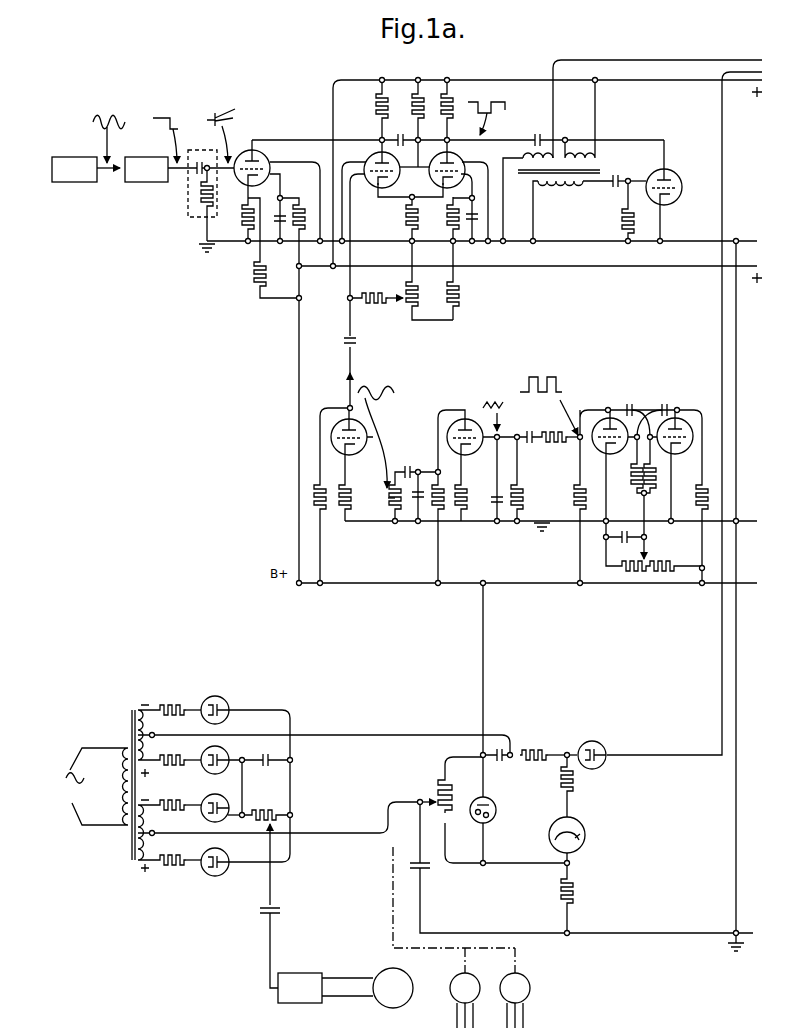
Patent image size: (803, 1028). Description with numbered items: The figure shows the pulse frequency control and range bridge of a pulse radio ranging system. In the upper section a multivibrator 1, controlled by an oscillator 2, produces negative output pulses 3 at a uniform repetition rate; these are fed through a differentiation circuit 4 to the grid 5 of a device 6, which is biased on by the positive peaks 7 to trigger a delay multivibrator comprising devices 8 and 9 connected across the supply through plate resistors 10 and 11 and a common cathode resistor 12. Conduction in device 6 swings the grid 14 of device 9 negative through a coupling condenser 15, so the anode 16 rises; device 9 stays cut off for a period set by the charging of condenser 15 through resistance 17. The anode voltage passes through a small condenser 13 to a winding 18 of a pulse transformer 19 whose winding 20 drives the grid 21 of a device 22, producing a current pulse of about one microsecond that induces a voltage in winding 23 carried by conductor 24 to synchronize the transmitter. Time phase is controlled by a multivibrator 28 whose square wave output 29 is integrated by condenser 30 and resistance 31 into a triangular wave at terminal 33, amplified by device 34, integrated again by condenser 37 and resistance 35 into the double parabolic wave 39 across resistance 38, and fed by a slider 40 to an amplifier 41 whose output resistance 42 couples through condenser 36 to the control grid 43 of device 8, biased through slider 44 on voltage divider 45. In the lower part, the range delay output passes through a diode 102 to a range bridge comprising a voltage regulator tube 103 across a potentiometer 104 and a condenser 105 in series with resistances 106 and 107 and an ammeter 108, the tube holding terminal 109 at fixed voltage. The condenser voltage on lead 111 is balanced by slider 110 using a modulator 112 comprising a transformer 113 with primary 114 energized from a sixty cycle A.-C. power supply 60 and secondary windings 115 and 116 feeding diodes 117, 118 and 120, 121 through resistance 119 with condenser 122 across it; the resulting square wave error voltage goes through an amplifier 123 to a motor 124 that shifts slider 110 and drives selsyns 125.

The multivibrator 1 is at (150, 183).
The oscillator 2 is at (82, 157).
The negative output pulses 3 is at (165, 121).
The differentiation circuit 4 is at (188, 212).
The grid 5 is at (245, 184).
The device 6 is at (269, 158).
The positive peaks 7 is at (230, 114).
The device 8 is at (391, 178).
The device 9 is at (430, 182).
The plate resistor 10 is at (376, 108).
The plate resistor 11 is at (445, 101).
The common cathode resistor 12 is at (404, 229).
The small condenser 13 is at (537, 133).
The grid 14 is at (458, 177).
The coupling condenser 15 is at (399, 134).
The anode 16 is at (457, 157).
The resistance 17 is at (413, 101).
The winding 18 is at (580, 150).
The pulse transformer 19 is at (612, 168).
The winding 20 is at (558, 188).
The grid 21 is at (678, 191).
The device 22 is at (680, 180).
The winding 23 is at (522, 157).
The conductor 24 is at (672, 59).
The multivibrator 28 is at (677, 408).
The square wave output 29 is at (547, 374).
The condenser 30 is at (492, 500).
The resistance 31 is at (554, 437).
The terminal 33 is at (498, 436).
The device 34 is at (472, 454).
The resistance 35 is at (441, 478).
The coupling condenser 36 is at (358, 343).
The condenser 37 is at (420, 485).
The resistance 38 is at (400, 518).
The double parabolic wave shape 39 is at (384, 434).
The slider 40 is at (386, 505).
The amplifier 41 is at (361, 456).
The output resistance 42 is at (322, 517).
The control grid 43 is at (367, 182).
The slider 44 is at (391, 305).
The voltage divider 45 is at (460, 297).
The A.-C. power supply 60 is at (70, 786).
The diode 102 is at (607, 756).
The voltage regulator tube 103 is at (486, 824).
The potentiometer 104 is at (452, 826).
The condenser 105 is at (499, 761).
The resistance 106 is at (535, 750).
The resistance 107 is at (573, 786).
The ammeter 108 is at (586, 836).
The terminal 109 is at (570, 864).
The slider 110 is at (434, 800).
The lead 111 is at (366, 734).
The modulator 112 is at (177, 687).
The transformer 113 is at (131, 712).
The primary 114 is at (124, 828).
The secondary winding 115 is at (154, 730).
The secondary winding 116 is at (154, 828).
The diode 117 is at (225, 704).
The diode 118 is at (222, 754).
The resistance 119 is at (275, 810).
The diode 120 is at (228, 820).
The diode 121 is at (225, 873).
The condenser 122 is at (265, 766).
The amplifier 123 is at (298, 972).
The motor 124 is at (381, 970).
The selsyns 125 is at (508, 978).